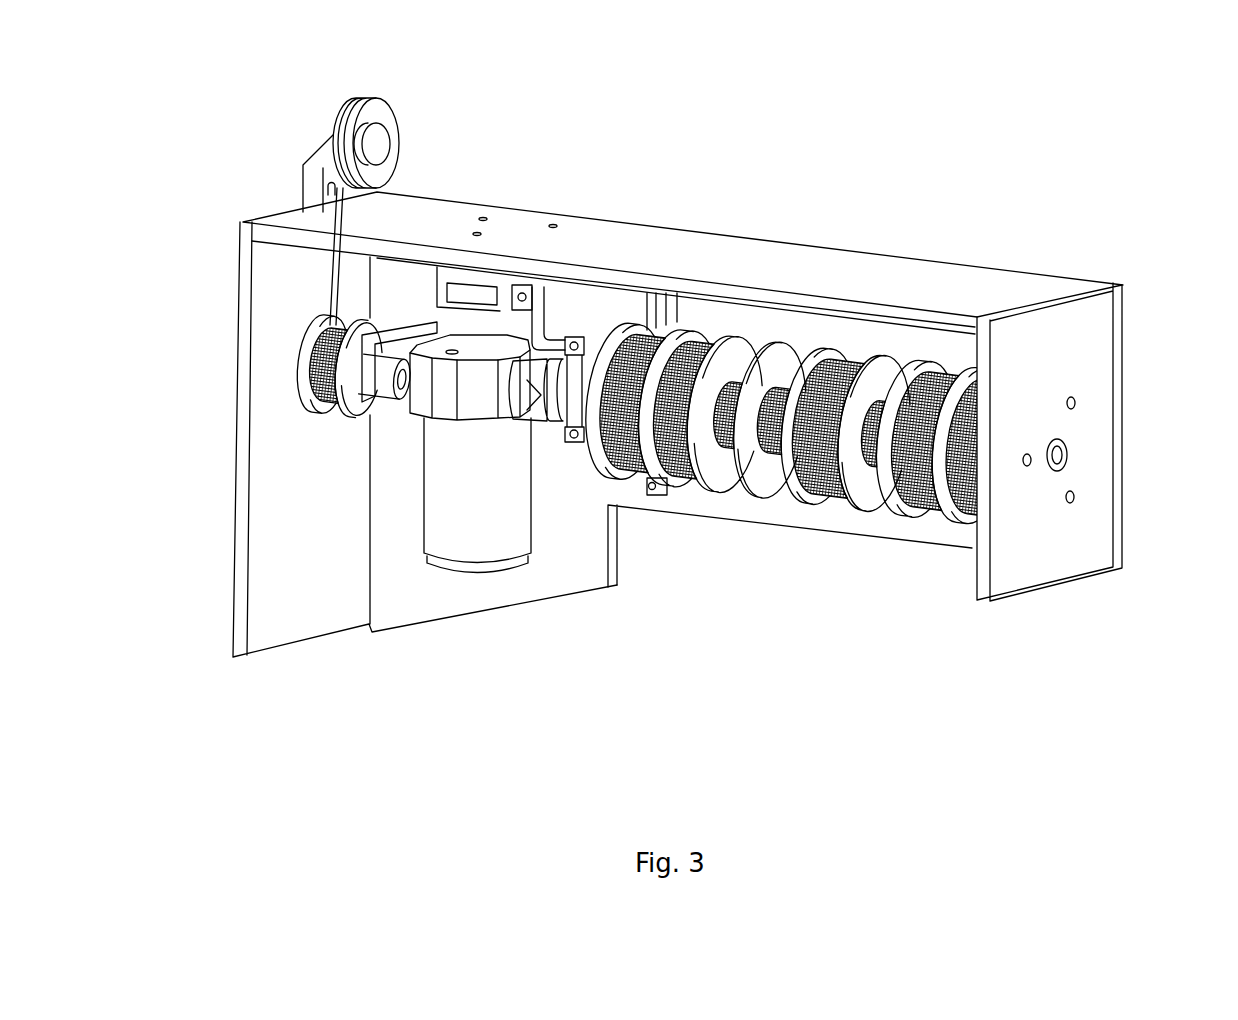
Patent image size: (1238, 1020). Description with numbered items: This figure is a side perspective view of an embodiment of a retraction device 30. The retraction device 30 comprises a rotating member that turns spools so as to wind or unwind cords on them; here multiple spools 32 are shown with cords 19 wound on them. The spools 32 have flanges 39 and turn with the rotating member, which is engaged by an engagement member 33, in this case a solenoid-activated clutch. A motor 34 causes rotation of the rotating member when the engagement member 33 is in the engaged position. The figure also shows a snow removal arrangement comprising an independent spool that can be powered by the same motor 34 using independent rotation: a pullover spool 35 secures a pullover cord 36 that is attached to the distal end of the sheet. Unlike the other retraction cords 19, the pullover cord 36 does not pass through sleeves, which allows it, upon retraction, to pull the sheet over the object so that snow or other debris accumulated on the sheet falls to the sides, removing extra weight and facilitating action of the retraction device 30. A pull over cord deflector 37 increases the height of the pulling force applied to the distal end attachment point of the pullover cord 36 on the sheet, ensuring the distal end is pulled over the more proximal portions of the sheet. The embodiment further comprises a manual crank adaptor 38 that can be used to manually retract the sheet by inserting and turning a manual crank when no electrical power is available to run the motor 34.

The retraction device 30 is at (593, 100).
The cords 19 is at (837, 367).
The spools 32 is at (773, 500).
The engagement member 33 is at (542, 412).
The motor 34 is at (483, 480).
The pullover spool 35 is at (300, 362).
The pullover cord 36 is at (330, 273).
The pull over cord deflector 37 is at (380, 107).
The manual crank adaptor 38 is at (1062, 450).
The flanges 39 is at (928, 360).